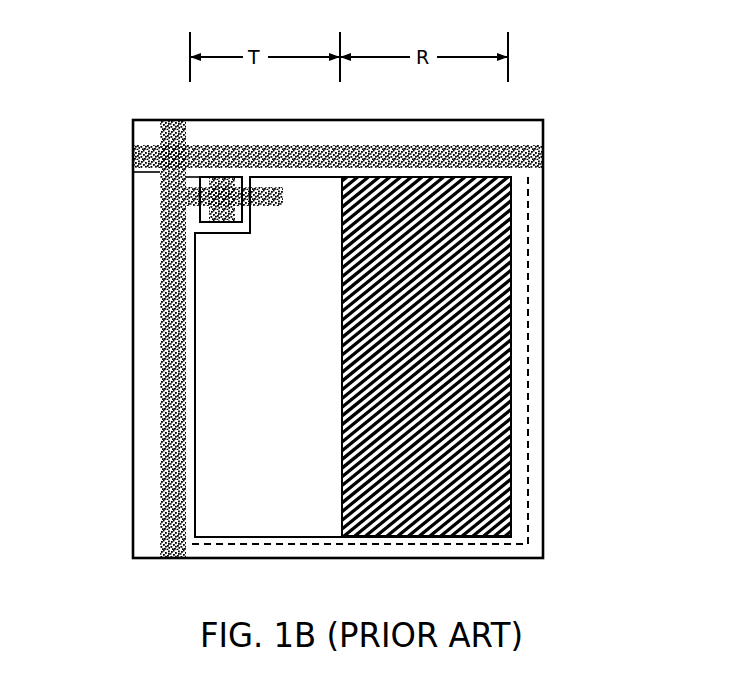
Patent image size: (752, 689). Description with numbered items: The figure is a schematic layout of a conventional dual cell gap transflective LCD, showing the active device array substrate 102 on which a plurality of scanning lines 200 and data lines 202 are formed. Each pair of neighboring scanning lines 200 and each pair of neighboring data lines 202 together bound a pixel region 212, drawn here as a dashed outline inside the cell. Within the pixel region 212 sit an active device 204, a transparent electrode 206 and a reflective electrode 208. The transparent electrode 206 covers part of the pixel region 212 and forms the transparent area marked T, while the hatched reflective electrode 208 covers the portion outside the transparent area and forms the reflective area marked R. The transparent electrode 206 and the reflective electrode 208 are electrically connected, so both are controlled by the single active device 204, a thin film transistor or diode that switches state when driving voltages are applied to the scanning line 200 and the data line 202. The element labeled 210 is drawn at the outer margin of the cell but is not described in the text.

The active device array substrate 102 is at (624, 609).
The scanning line 200 is at (543, 153).
The data line 202 is at (160, 418).
The active device 204 is at (222, 201).
The transparent electrode 206 is at (278, 522).
The reflective electrode 208 is at (493, 378).
The black matrix 210 is at (537, 485).
The pixel region 212 is at (528, 266).